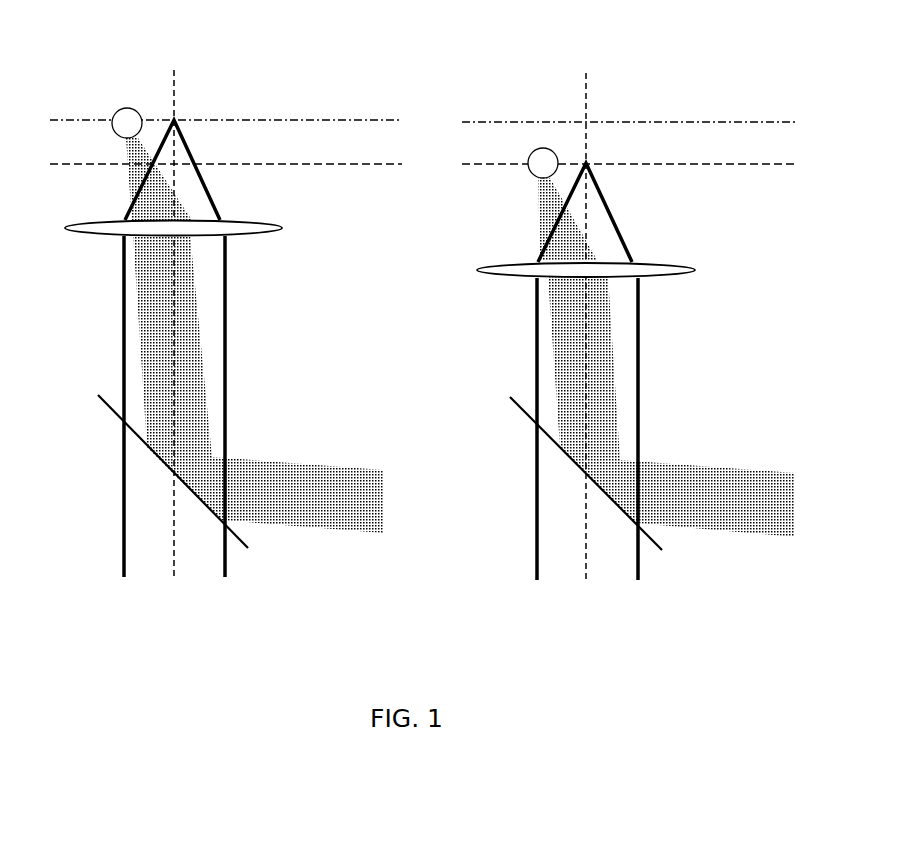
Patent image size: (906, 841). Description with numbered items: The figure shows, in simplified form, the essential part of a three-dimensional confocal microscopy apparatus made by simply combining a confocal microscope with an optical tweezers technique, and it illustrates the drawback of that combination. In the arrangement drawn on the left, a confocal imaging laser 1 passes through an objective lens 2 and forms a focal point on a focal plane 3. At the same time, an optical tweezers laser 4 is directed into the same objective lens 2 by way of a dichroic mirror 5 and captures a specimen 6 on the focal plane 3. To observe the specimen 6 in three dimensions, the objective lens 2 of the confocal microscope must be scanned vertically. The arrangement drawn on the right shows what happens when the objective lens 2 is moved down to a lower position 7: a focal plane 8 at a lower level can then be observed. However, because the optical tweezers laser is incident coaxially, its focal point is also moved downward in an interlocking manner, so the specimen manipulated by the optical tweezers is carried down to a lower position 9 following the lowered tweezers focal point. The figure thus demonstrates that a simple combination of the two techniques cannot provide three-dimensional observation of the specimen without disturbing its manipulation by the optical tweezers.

The confocal imaging laser 1 is at (120, 527).
The objective lens 2 is at (265, 238).
The focal plane 3 is at (295, 120).
The optical tweezers laser 4 is at (310, 485).
The dichroic mirror 5 is at (108, 412).
The specimen 6 is at (127, 122).
The lower position 7 is at (677, 278).
The focal plane at a lower level 8 is at (707, 163).
The lower position 9 is at (543, 162).